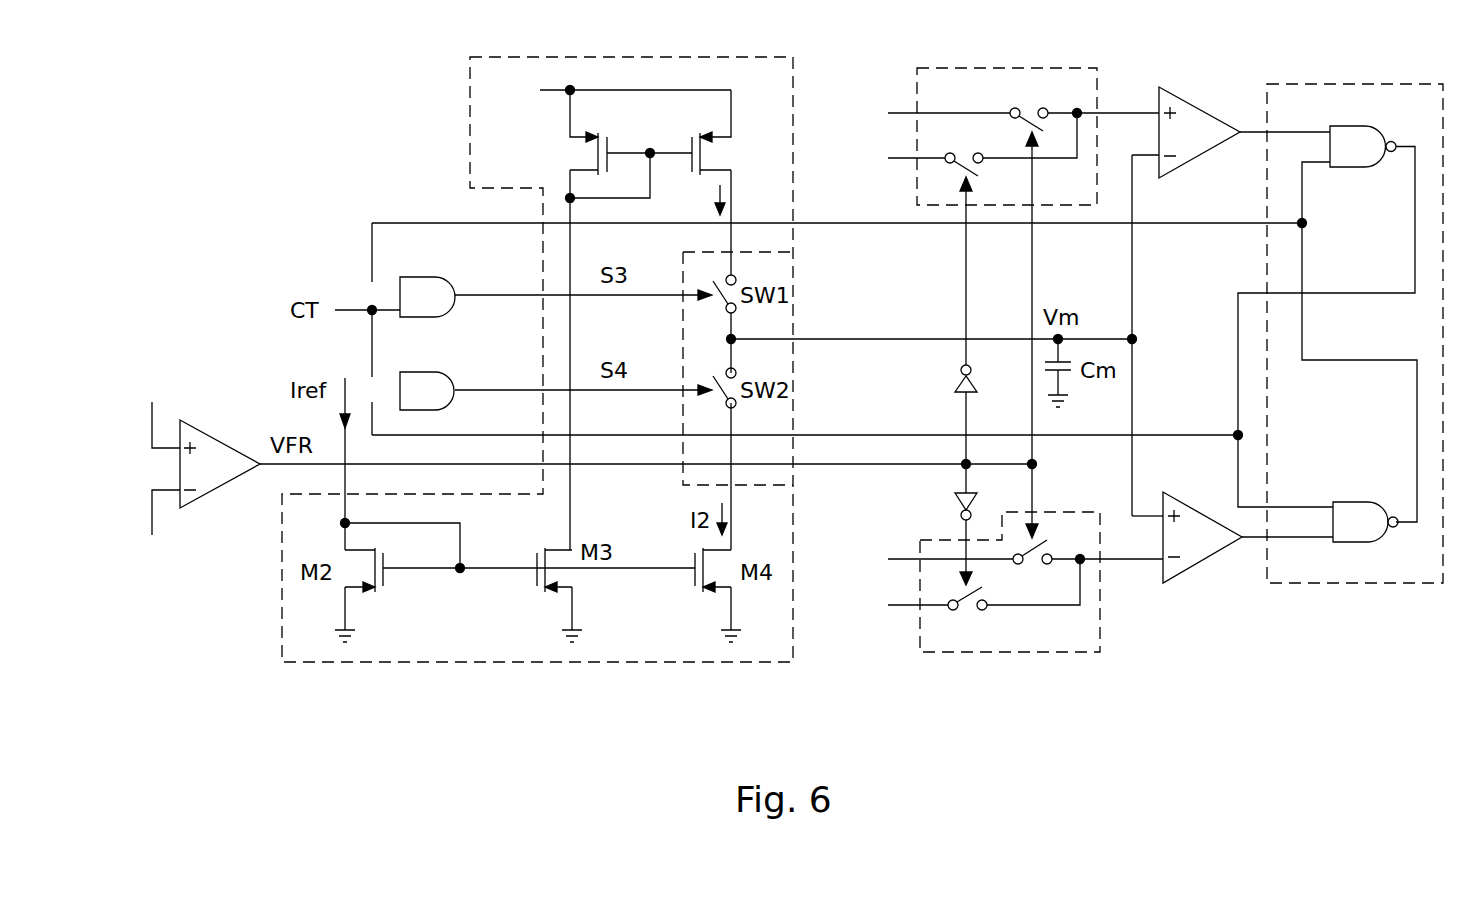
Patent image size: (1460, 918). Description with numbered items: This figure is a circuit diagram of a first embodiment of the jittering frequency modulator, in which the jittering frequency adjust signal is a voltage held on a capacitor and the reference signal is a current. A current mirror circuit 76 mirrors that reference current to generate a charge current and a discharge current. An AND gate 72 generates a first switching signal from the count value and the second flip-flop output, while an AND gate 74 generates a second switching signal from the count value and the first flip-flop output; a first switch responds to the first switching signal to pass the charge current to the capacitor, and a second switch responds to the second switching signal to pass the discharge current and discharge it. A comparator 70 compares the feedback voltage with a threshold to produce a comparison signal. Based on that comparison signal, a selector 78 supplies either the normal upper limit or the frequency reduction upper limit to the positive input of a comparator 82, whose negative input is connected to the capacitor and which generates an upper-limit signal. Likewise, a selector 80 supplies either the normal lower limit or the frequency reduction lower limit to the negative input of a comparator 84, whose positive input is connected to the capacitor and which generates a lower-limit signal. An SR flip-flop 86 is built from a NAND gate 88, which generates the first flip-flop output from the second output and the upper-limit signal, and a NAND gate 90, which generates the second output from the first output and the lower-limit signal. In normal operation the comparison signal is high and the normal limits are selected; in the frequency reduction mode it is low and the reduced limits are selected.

The comparator 70 is at (214, 437).
The AND gate 72 is at (437, 272).
The AND gate 74 is at (437, 368).
The current mirror circuit 76 is at (627, 57).
The selector 78 is at (1000, 68).
The selector 80 is at (1100, 605).
The comparator 82 is at (1194, 107).
The comparator 84 is at (1198, 565).
The SR flip-flop 86 is at (1347, 84).
The NAND gate 88 is at (1362, 168).
The NAND gate 90 is at (1362, 502).